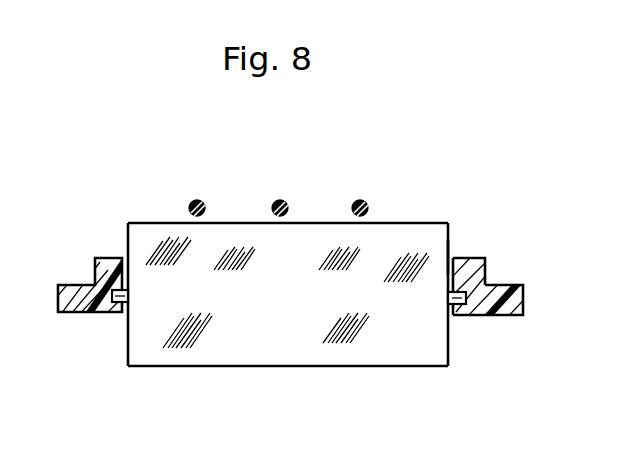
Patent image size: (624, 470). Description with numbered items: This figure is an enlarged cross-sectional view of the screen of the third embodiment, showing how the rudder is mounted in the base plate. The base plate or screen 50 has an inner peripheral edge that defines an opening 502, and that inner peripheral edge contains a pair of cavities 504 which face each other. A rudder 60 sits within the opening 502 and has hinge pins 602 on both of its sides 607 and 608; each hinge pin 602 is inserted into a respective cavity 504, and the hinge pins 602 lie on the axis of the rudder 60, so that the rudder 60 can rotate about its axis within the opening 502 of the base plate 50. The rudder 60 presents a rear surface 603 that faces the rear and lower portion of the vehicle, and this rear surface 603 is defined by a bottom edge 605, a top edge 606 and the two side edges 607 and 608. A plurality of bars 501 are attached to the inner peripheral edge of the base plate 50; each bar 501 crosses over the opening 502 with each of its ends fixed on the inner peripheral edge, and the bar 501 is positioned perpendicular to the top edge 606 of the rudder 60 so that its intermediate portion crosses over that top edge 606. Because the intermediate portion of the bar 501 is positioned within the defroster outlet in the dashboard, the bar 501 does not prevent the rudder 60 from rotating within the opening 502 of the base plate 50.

The base plate 50 is at (511, 300).
The bar 501 is at (284, 200).
The opening 502 is at (448, 270).
The cavity 504 is at (483, 266).
The rudder 60 is at (283, 307).
The hinge pin 602 is at (448, 302).
The rear surface 603 is at (225, 340).
The bottom edge 605 is at (430, 355).
The top edge 606 is at (428, 233).
The side edge 607 is at (450, 317).
The side edge 608 is at (133, 328).